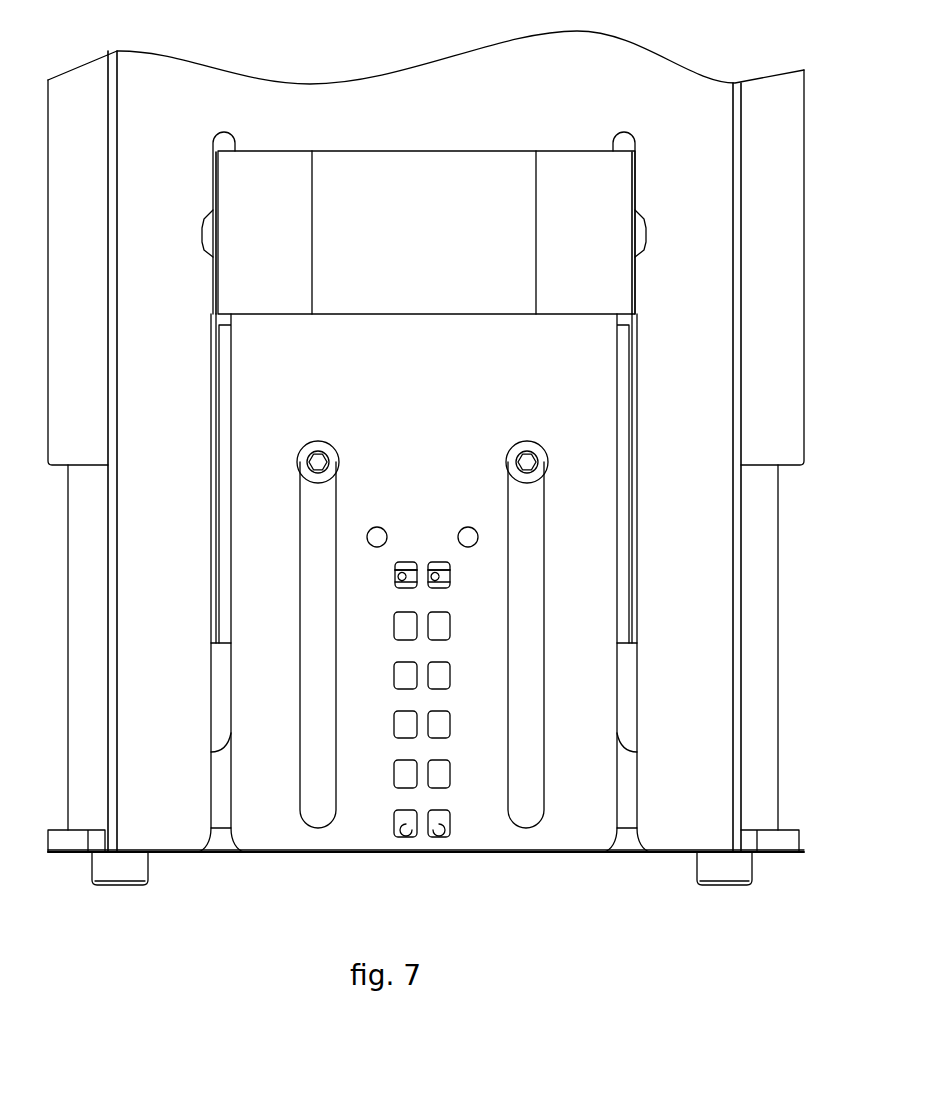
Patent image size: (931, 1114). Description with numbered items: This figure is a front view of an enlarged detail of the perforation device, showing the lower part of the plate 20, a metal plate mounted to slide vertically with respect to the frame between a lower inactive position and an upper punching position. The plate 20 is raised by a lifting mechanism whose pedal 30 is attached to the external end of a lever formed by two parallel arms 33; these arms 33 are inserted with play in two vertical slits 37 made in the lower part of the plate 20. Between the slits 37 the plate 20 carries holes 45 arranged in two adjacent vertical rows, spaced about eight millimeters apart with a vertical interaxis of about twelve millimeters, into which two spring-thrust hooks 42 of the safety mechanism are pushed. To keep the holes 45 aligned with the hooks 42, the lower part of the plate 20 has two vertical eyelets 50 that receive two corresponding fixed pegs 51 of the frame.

The plate 20 is at (703, 698).
The pedal 30 is at (420, 177).
The arms 33 is at (228, 312).
The vertical slits 37 is at (218, 782).
The hooks 42 is at (439, 566).
The holes 45 is at (393, 582).
The vertical eyelets 50 is at (310, 592).
The fixed pegs 51 is at (320, 458).